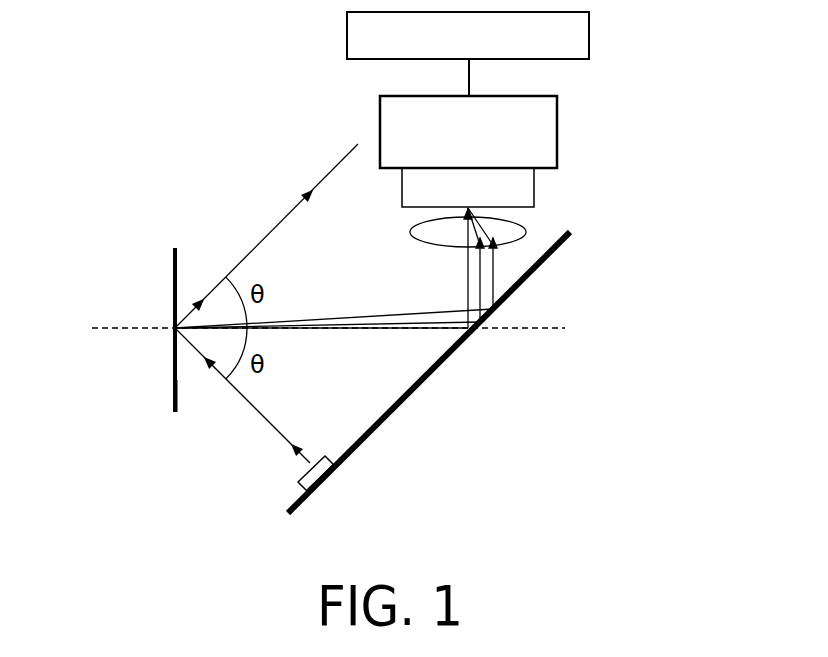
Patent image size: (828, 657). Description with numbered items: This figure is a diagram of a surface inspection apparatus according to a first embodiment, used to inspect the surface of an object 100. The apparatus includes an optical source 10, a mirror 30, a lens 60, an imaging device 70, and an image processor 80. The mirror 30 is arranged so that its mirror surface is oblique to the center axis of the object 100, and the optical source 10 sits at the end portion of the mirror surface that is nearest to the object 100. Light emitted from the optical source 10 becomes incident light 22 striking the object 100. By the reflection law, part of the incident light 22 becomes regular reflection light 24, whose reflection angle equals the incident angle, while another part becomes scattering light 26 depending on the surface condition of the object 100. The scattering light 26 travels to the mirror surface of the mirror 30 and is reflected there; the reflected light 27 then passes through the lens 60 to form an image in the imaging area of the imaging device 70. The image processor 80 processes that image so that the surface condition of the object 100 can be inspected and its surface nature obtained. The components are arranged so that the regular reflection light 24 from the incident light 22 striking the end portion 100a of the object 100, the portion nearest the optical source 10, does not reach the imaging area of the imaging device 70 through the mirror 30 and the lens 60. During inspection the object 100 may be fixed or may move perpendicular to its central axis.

The optical source 10 is at (325, 457).
The incident light 22 is at (247, 405).
The regular reflection light 24 is at (292, 213).
The scattering light 26 is at (347, 318).
The light reflected by the mirror surface 27 is at (466, 270).
The mirror 30 is at (442, 360).
The lens 60 is at (520, 226).
The imaging device 70 is at (557, 130).
The image processor 80 is at (589, 33).
The object 100 is at (173, 270).
The end portion of the object 100a is at (175, 412).